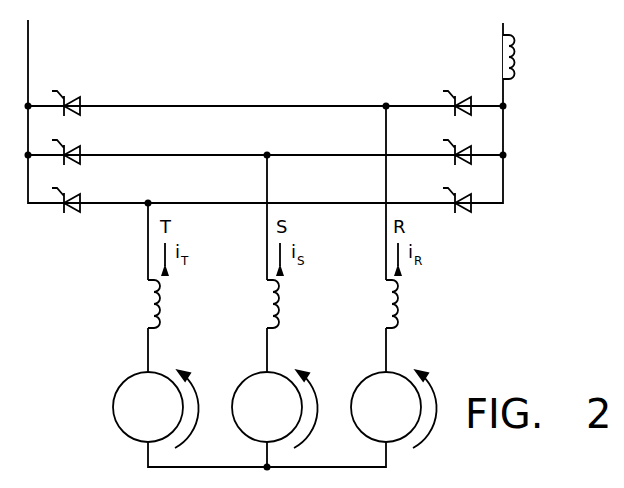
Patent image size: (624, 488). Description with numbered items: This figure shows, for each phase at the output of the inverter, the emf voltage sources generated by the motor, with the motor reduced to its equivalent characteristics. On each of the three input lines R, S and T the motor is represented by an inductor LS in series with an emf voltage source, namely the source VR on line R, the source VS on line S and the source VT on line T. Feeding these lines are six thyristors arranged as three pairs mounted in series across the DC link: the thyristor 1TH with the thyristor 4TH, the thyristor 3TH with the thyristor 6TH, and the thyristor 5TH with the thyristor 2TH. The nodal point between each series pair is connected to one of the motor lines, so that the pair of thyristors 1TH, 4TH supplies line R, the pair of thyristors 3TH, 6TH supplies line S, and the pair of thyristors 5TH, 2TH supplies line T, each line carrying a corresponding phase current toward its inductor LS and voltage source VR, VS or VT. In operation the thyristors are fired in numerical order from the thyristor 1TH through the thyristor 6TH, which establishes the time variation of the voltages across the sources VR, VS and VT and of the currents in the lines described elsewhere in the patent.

The thyristor 1TH is at (85, 96).
The thyristor 2TH is at (472, 193).
The thyristor 3TH is at (85, 145).
The thyristor 4TH is at (471, 96).
The thyristor 5TH is at (85, 193).
The thyristor 6TH is at (471, 145).
The inductor LS is at (288, 304).
The emf voltage source VT is at (156, 409).
The emf voltage source VS is at (275, 409).
The emf voltage source VR is at (394, 409).